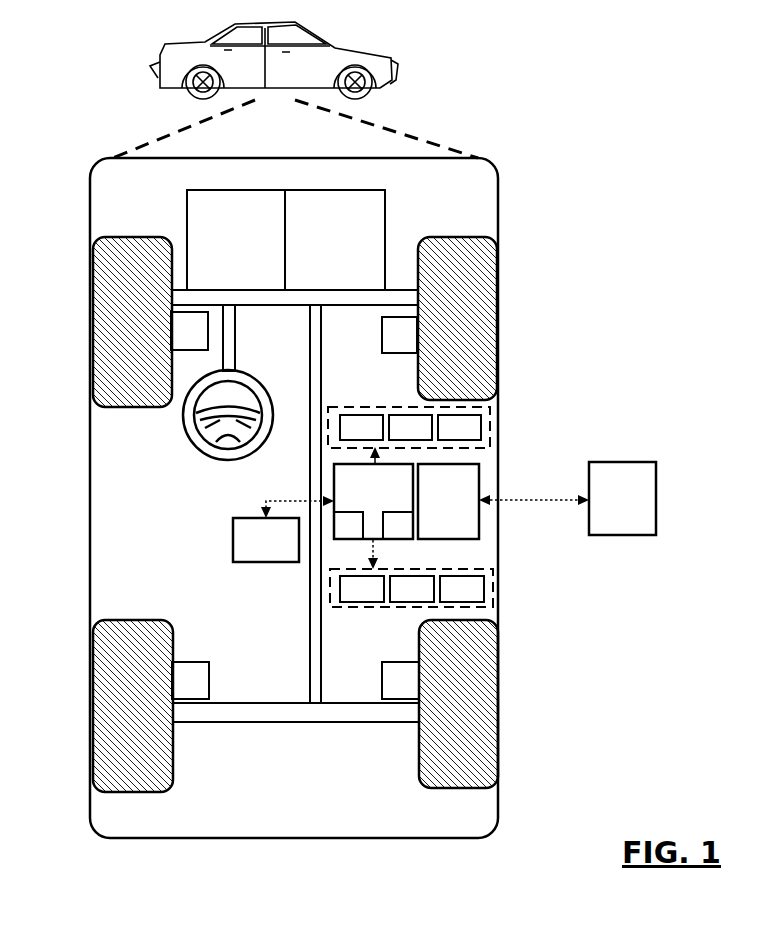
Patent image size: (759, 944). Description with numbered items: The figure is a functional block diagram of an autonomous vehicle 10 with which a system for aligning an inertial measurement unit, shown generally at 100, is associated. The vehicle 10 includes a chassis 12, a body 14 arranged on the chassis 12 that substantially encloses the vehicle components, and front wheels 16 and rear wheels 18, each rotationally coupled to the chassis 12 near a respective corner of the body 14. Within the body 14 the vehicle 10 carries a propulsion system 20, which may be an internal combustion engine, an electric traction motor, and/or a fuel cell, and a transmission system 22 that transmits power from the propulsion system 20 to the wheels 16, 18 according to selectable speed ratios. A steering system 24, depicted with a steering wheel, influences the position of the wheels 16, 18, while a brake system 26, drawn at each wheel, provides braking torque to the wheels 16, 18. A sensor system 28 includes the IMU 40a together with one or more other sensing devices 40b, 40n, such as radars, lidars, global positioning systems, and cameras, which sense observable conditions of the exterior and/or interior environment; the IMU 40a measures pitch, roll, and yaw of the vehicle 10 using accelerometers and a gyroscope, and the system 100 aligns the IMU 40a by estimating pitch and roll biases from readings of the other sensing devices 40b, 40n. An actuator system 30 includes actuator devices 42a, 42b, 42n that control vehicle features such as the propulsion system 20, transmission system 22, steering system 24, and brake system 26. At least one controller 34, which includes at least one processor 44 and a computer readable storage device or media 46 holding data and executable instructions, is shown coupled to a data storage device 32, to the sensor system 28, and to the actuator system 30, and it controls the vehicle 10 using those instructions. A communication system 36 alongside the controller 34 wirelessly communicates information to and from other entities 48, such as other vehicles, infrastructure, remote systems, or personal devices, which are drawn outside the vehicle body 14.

The vehicle 10 is at (162, 72).
The system for aligning an IMU 100 is at (522, 170).
The chassis 12 is at (310, 645).
The body 14 is at (90, 485).
The front wheels 16 is at (140, 237).
The rear wheels 18 is at (150, 792).
The propulsion system 20 is at (236, 240).
The transmission system 22 is at (335, 240).
The steering system 24 is at (256, 330).
The brake system 26 is at (295, 505).
The sensor system 28 is at (340, 407).
The actuator system 30 is at (347, 609).
The data storage device 32 is at (266, 540).
The controller 34 is at (373, 501).
The communication system 36 is at (448, 501).
The IMU 40a is at (361, 427).
The sensing device 40b is at (410, 427).
The sensing device 40n is at (459, 427).
The actuator device 42a is at (362, 589).
The actuator device 42b is at (412, 589).
The actuator device 42n is at (462, 589).
The processor 44 is at (348, 525).
The computer readable storage device or media 46 is at (398, 525).
The other entities 48 is at (622, 498).